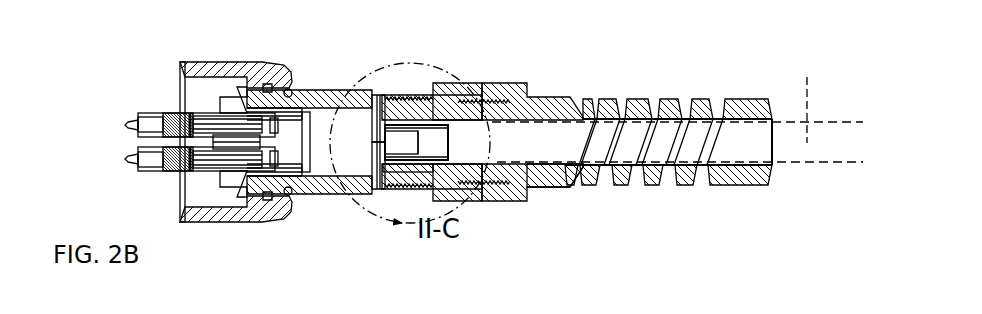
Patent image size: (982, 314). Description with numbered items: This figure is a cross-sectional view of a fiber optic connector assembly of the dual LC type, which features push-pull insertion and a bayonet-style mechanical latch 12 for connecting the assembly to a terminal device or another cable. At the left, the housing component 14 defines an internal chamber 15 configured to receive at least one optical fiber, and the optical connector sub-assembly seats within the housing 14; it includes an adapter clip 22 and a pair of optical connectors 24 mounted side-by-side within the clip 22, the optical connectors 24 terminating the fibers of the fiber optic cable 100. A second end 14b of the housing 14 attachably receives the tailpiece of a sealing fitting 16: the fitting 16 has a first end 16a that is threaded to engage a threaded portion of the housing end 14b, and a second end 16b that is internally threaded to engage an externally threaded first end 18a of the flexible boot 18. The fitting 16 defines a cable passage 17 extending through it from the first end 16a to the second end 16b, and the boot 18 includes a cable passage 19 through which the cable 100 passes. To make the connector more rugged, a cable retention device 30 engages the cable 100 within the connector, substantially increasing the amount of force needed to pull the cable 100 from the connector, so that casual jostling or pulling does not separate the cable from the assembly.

The bayonet-style mechanical latch 12 is at (200, 68).
The housing component 14 is at (322, 100).
The second end of the housing 14b is at (410, 93).
The internal chamber 15 is at (315, 152).
The tailpiece of a sealing fitting 16 is at (453, 93).
The first end of the fitting 16a is at (397, 168).
The second end of the fitting 16b is at (493, 175).
The cable passage 17 is at (460, 130).
The flexible boot 18 is at (557, 90).
The first end of the boot 18a is at (507, 192).
The cable passage 19 is at (560, 133).
The adapter clip 22 is at (217, 103).
The optical connectors 24 is at (137, 132).
The cable retention device 30 is at (407, 118).
The fiber optic cable 100 is at (809, 93).